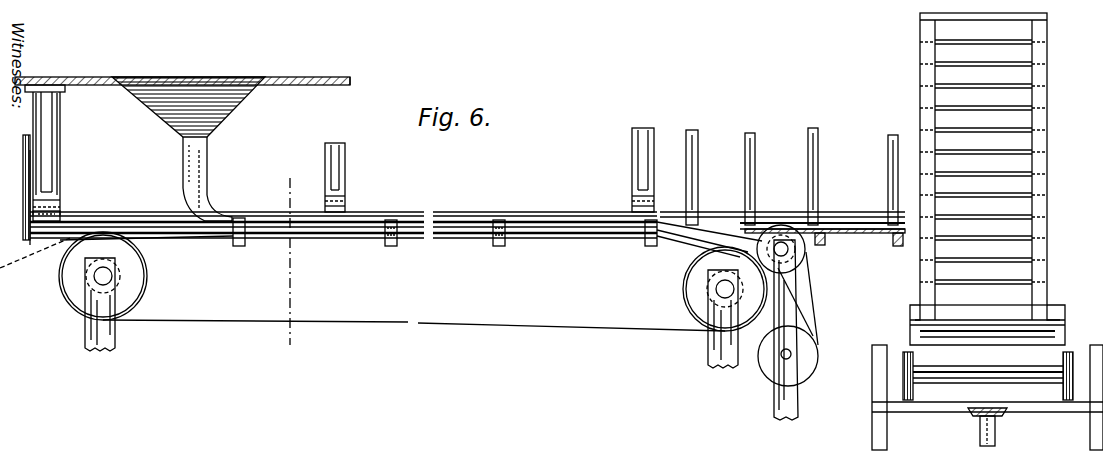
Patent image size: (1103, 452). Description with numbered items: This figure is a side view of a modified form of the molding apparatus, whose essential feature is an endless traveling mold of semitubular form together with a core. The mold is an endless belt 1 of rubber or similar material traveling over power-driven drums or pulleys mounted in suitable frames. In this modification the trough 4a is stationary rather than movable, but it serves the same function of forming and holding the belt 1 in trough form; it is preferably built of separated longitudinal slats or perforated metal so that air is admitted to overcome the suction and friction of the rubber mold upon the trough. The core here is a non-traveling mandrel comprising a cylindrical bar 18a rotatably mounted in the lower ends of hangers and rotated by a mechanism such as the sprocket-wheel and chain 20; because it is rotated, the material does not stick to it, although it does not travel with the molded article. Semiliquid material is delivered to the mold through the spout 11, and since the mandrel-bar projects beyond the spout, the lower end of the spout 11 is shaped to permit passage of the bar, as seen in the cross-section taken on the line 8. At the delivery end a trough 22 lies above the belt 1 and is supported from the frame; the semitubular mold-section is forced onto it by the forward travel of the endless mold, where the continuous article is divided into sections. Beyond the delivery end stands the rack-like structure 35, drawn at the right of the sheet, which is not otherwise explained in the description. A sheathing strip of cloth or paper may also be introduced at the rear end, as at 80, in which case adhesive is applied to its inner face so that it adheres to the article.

The endless belt 1 is at (172, 238).
The trough 4a is at (367, 226).
The section line 8 is at (296, 257).
The spout 11 is at (195, 169).
The cylindrical bar 18a is at (470, 210).
The sprocket-wheel and chain 20 is at (27, 187).
The trough 22 is at (733, 216).
The machine frame 35 is at (1040, 118).
The lining-strip introduced at rear end 80 is at (796, 304).